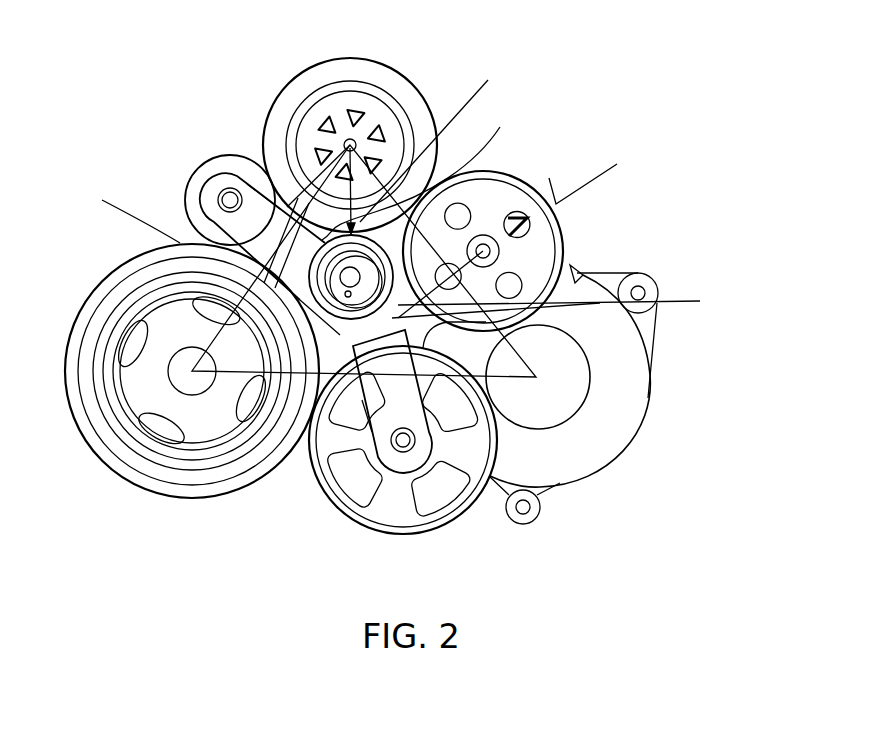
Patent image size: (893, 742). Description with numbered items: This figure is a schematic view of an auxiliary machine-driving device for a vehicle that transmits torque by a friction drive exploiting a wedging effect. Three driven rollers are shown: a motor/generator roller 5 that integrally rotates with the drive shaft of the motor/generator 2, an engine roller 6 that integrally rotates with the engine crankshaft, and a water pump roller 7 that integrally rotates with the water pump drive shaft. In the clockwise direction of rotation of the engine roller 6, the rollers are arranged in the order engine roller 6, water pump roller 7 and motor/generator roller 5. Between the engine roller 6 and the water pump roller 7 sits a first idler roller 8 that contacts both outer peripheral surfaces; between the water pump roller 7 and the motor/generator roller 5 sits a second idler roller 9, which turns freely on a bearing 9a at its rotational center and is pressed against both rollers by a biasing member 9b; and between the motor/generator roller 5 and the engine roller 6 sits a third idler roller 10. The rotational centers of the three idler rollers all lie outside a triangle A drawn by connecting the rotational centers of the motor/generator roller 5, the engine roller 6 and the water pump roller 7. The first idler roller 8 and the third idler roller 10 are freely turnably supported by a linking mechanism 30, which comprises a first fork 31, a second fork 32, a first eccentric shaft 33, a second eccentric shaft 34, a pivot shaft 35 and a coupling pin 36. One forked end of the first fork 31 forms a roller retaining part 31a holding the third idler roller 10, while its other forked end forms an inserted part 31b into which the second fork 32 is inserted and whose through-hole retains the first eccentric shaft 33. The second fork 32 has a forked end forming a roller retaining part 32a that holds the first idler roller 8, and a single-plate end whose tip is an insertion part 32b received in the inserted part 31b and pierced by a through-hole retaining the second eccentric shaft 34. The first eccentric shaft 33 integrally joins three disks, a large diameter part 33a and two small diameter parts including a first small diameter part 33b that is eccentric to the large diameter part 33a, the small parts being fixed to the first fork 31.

The motor/generator 2 is at (603, 273).
The motor/generator roller 5 is at (577, 393).
The engine roller 6 is at (183, 499).
The water pump roller 7 is at (437, 107).
The first idler roller 8 is at (222, 157).
The second idler roller 9 is at (538, 177).
The bearing 9a is at (499, 251).
The biasing member 9b is at (617, 166).
The third idler roller 10 is at (443, 530).
The linking mechanism 30 is at (440, 340).
The first fork 31 is at (422, 392).
The roller retaining part 31a is at (372, 432).
The inserted part 31b is at (572, 301).
The second fork 32 is at (280, 197).
The roller retaining part 32a is at (257, 178).
The insertion part 32b is at (287, 208).
The first eccentric shaft 33 is at (432, 140).
The large diameter part 33a is at (425, 171).
The first small diameter part 33b is at (344, 318).
The second eccentric shaft 34 is at (218, 190).
The pivot shaft 35 is at (314, 300).
The coupling pin 36 is at (345, 290).
The triangle A is at (134, 210).